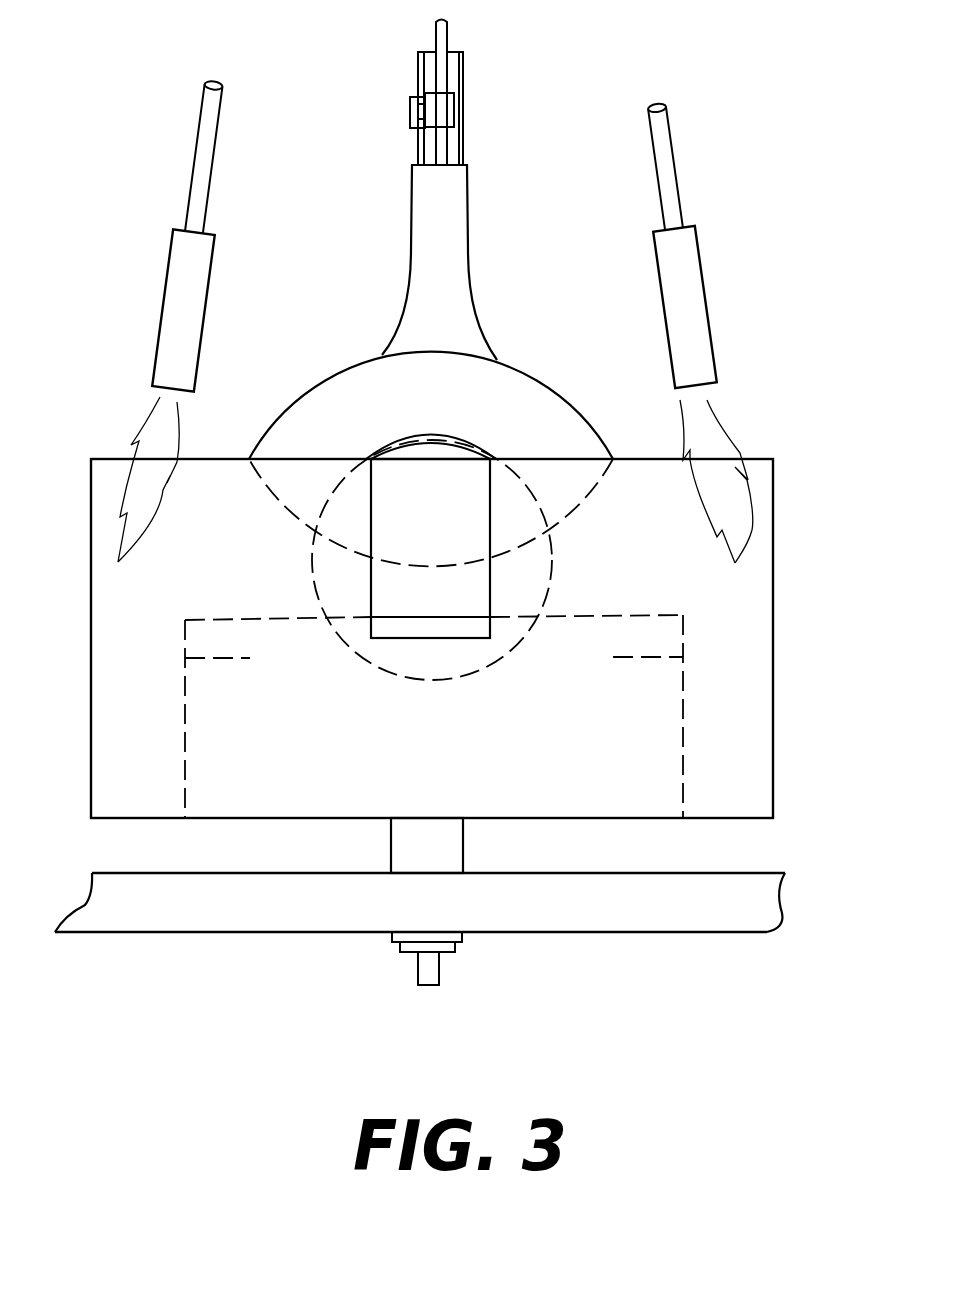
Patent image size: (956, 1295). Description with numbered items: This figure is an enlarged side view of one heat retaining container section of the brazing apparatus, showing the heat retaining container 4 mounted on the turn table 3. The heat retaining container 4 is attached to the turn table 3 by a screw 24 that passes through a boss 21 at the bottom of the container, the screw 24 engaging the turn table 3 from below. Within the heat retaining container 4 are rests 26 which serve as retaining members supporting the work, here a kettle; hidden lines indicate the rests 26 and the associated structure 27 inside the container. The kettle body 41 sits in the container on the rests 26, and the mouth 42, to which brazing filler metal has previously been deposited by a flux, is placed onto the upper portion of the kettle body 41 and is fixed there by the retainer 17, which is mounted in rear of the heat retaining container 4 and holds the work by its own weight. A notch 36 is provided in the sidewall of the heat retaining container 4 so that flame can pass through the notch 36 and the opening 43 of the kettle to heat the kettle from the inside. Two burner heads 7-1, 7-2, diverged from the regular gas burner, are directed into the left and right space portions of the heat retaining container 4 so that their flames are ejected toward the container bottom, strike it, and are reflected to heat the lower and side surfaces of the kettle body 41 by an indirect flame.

The turn table 3 is at (732, 913).
The heat retaining container 4 is at (108, 738).
The burner head 7-1 is at (180, 298).
The burner head 7-2 is at (697, 310).
The retainer 17 is at (469, 85).
The boss 21 is at (402, 850).
The screw 24 is at (432, 967).
The rest 26 is at (668, 752).
The upper frame portion 27 is at (663, 635).
The notch 36 is at (423, 553).
The kettle body 41 is at (320, 420).
The mouth 42 is at (450, 288).
The opening 43 is at (460, 475).